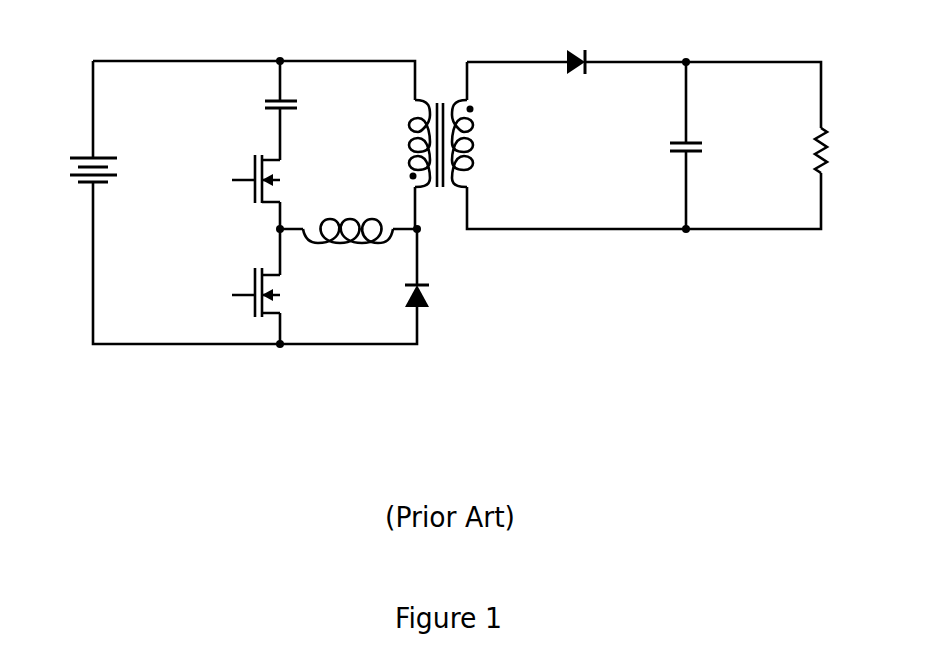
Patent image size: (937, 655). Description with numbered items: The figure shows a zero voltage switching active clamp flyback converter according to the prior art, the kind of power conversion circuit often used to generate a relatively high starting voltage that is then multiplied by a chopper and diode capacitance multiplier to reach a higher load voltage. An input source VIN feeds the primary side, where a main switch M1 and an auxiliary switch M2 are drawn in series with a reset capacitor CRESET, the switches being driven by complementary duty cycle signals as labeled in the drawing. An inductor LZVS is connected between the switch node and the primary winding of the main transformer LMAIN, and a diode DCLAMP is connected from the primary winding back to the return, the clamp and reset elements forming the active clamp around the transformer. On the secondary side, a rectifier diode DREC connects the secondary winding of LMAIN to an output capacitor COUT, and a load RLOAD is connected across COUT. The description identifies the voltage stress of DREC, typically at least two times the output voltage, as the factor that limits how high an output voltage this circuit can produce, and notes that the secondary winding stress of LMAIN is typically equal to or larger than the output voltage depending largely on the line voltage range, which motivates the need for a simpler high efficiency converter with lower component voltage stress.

The input voltage source VIN is at (69, 174).
The reset capacitor CRESET is at (246, 103).
The auxiliary switch transistor M2 is at (241, 179).
The main switch transistor M1 is at (261, 292).
The zero voltage switching inductor LZVS is at (348, 251).
The clamp diode DCLAMP is at (453, 297).
The main transformer LMAIN is at (441, 106).
The rectifier diode DREC is at (575, 45).
The output capacitor COUT is at (706, 145).
The load resistor RLOAD is at (853, 150).